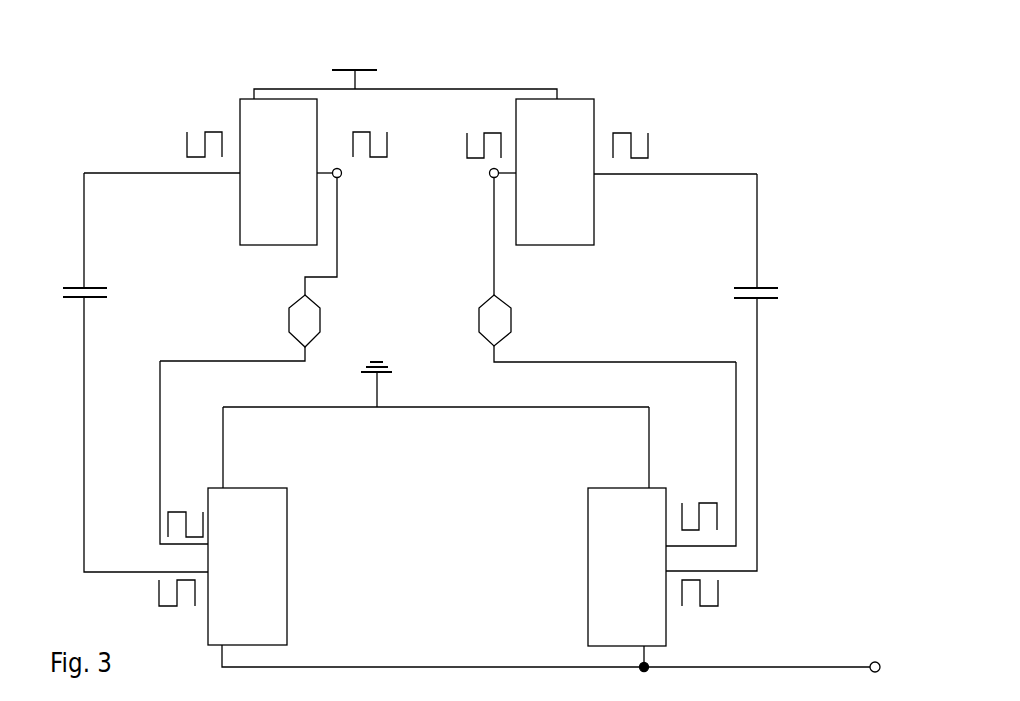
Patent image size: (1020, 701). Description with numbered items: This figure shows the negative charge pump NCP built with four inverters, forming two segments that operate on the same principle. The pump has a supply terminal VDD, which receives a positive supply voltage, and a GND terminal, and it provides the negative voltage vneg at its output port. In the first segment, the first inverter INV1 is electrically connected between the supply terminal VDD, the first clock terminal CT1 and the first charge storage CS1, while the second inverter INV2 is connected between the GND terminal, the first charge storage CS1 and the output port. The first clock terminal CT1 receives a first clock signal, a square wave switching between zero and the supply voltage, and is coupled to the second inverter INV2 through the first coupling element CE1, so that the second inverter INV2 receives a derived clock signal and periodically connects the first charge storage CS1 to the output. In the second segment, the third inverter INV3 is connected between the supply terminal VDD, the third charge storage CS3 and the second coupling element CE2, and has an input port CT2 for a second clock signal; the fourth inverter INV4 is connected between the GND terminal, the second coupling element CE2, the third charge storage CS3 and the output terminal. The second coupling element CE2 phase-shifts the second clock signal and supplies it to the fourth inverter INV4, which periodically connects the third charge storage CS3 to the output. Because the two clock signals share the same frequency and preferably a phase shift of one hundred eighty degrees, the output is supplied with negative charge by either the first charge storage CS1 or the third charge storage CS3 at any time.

The negative charge pump NCP is at (778, 122).
The supply terminal VDD is at (357, 63).
The GND terminal GND is at (414, 382).
The first inverter INV1 is at (240, 220).
The second inverter INV2 is at (287, 542).
The third inverter INV3 is at (593, 103).
The fourth inverter INV4 is at (588, 562).
The first clock terminal CT1 is at (341, 178).
The second clock terminal CT2 is at (494, 178).
The first coupling element CE1 is at (321, 318).
The second coupling element CE2 is at (512, 320).
The first charge storage CS1 is at (97, 298).
The third charge storage CS3 is at (770, 298).
The negative voltage vneg is at (868, 648).